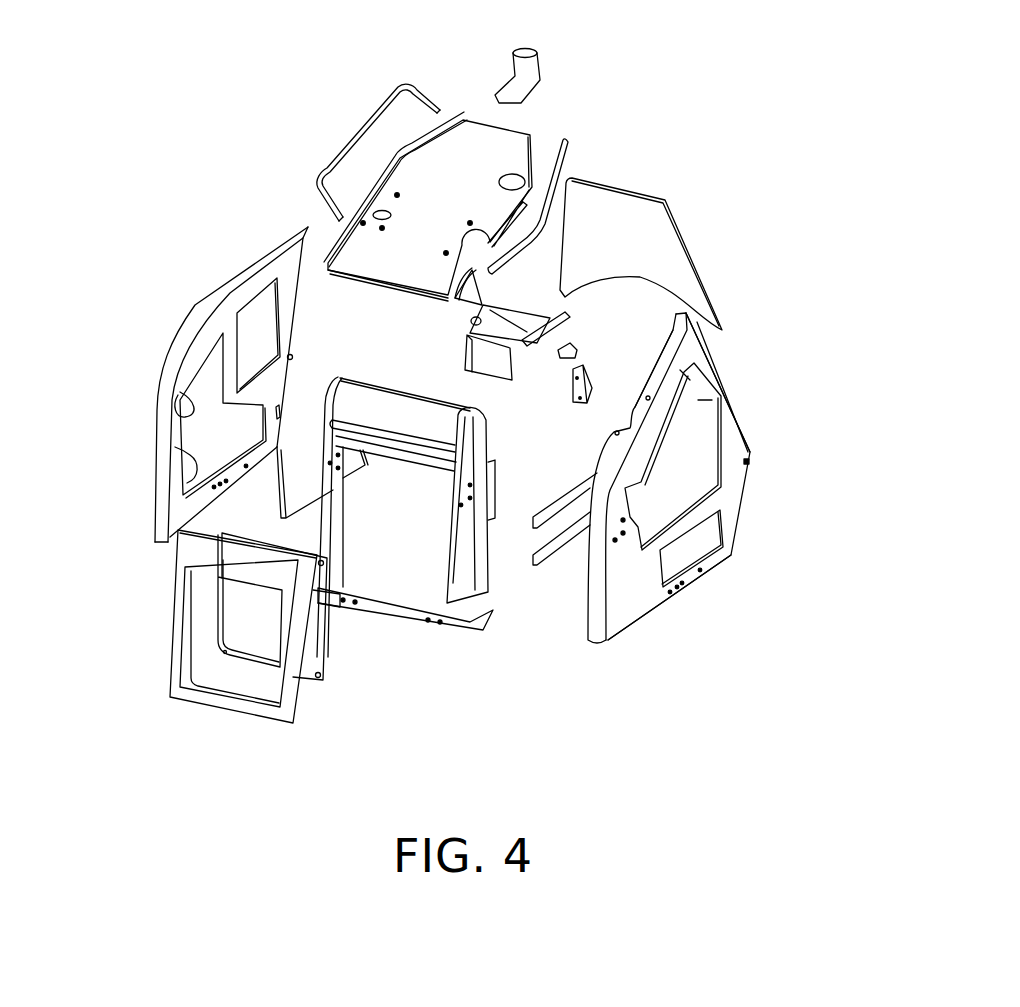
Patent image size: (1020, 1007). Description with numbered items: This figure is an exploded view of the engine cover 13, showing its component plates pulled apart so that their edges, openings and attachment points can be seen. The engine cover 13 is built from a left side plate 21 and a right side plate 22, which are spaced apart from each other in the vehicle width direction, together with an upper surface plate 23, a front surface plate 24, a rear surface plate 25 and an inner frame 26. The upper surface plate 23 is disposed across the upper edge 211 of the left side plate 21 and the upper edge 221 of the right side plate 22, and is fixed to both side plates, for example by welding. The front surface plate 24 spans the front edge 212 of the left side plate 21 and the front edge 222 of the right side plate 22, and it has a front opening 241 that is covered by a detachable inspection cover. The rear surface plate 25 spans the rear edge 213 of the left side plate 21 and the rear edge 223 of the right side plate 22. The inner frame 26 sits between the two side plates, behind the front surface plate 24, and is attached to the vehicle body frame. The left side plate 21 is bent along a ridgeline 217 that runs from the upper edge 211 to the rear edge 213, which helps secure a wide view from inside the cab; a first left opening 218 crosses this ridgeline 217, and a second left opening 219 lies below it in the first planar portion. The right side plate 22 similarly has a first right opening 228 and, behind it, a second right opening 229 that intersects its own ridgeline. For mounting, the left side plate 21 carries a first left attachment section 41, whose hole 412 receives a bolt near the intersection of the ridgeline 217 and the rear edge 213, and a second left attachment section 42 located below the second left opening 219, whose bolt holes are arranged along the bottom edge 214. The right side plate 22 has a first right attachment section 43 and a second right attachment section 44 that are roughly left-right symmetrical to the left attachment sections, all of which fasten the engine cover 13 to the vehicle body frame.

The engine cover 13 is at (243, 77).
The left side plate 21 is at (627, 620).
The upper edge 211 is at (649, 384).
The front edge 212 is at (586, 588).
The rear edge 213 is at (742, 418).
The bottom edge 214 is at (625, 615).
The ridgeline 217 is at (727, 415).
The first left opening 218 is at (702, 497).
The second left opening 219 is at (705, 552).
The right side plate 22 is at (222, 323).
The upper edge 221 is at (292, 210).
The front edge 222 is at (187, 483).
The rear edge 223 is at (300, 311).
The first right opening 228 is at (180, 392).
The second right opening 229 is at (222, 318).
The upper surface plate 23 is at (425, 177).
The front surface plate 24 is at (204, 702).
The front opening 241 is at (262, 692).
The rear surface plate 25 is at (613, 210).
The inner frame 26 is at (462, 587).
The first left attachment section 41 is at (760, 452).
The hole 412 is at (750, 462).
The second left attachment section 42 is at (682, 598).
The first right attachment section 43 is at (302, 365).
The second right attachment section 44 is at (230, 485).